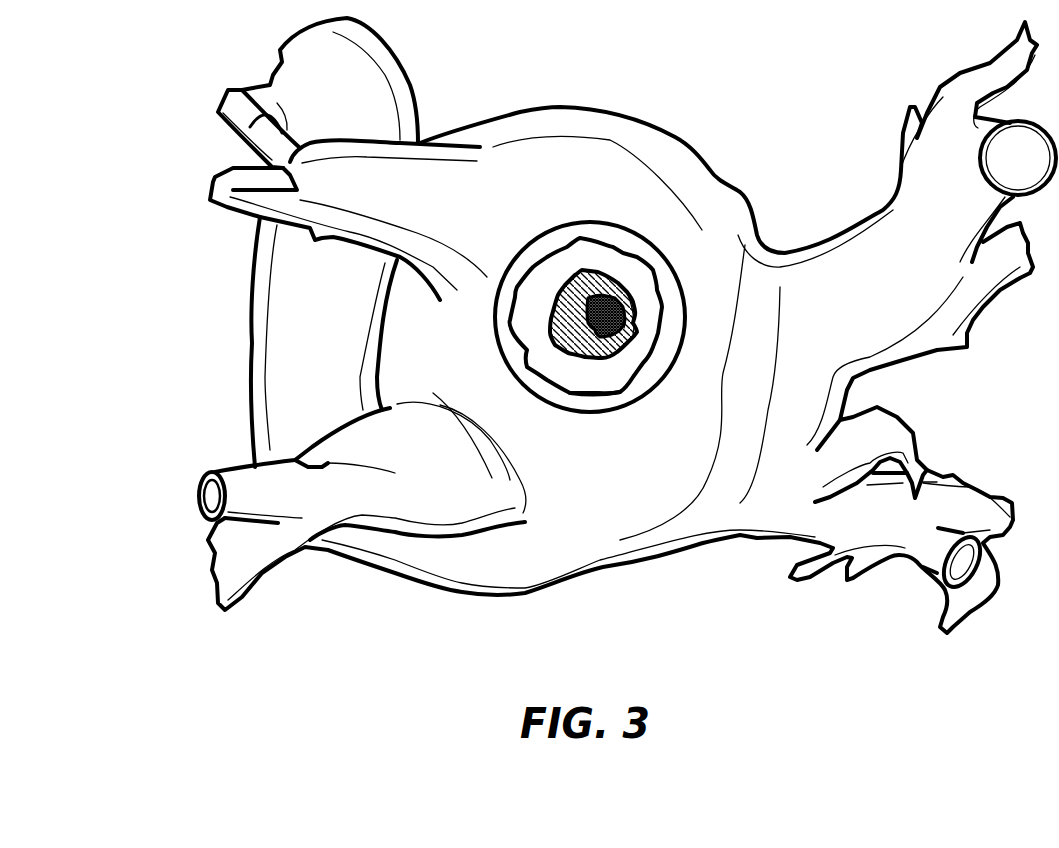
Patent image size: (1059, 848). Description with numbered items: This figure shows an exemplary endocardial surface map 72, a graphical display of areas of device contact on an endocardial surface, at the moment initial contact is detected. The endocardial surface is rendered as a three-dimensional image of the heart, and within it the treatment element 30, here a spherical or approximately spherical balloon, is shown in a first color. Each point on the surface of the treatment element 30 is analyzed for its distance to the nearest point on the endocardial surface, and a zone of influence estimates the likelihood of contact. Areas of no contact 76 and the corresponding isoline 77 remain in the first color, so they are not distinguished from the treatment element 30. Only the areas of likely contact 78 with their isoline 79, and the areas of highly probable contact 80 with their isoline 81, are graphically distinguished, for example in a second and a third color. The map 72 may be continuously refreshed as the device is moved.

The endocardial surface map 72 is at (698, 142).
The treatment element 30 is at (495, 318).
The areas of no contact 76 is at (574, 375).
The isoline 77 is at (604, 395).
The areas of likely contact 78 is at (579, 281).
The isoline 79 is at (600, 270).
The areas of highly probable contact 80 is at (628, 323).
The isoline 81 is at (638, 324).